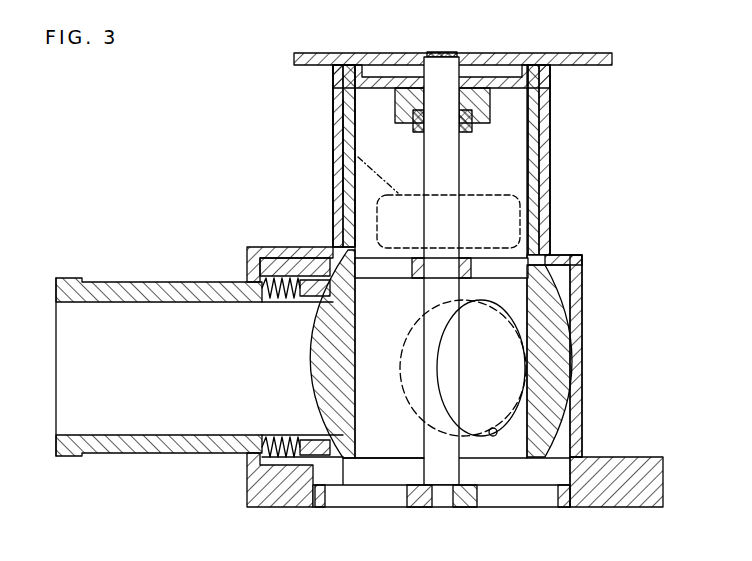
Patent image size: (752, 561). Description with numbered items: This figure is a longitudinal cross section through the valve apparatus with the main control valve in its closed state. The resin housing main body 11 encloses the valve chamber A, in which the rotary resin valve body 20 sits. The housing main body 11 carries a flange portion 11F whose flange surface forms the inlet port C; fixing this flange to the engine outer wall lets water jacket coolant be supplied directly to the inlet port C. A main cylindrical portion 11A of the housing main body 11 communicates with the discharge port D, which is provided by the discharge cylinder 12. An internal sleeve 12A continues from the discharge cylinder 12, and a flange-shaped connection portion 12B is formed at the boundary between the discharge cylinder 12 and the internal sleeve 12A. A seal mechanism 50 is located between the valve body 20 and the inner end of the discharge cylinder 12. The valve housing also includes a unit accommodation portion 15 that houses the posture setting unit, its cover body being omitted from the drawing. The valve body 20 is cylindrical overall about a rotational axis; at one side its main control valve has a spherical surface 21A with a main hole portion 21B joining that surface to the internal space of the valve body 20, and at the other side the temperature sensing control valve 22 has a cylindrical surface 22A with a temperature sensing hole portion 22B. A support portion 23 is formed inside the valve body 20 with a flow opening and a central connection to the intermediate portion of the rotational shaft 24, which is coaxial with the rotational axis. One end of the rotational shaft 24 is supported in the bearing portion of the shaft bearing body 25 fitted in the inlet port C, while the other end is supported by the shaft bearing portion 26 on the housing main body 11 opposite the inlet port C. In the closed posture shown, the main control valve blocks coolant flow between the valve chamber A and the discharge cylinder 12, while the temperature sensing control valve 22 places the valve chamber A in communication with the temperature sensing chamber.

The housing main body 11 is at (584, 335).
The main cylindrical portion 11A is at (260, 247).
The flange portion 11F is at (664, 478).
The discharge cylinder 12 is at (150, 455).
The internal sleeve 12A is at (300, 300).
The connection portion 12B is at (245, 478).
The unit accommodation portion 15 is at (383, 62).
The valve body 20 is at (547, 291).
The spherical surface 21A is at (316, 370).
The main hole portion 21B is at (493, 438).
The temperature sensing control valve 22 is at (272, 133).
The cylindrical surface 22A is at (344, 168).
The temperature sensing hole portion 22B is at (335, 150).
The support portion 23 is at (358, 272).
The rotational shaft 24 is at (412, 432).
The shaft bearing body 25 is at (555, 507).
The shaft bearing portion 26 is at (462, 80).
The seal mechanism 50 is at (338, 262).
The valve chamber A is at (560, 452).
The inlet port C is at (338, 508).
The discharge port D is at (93, 328).